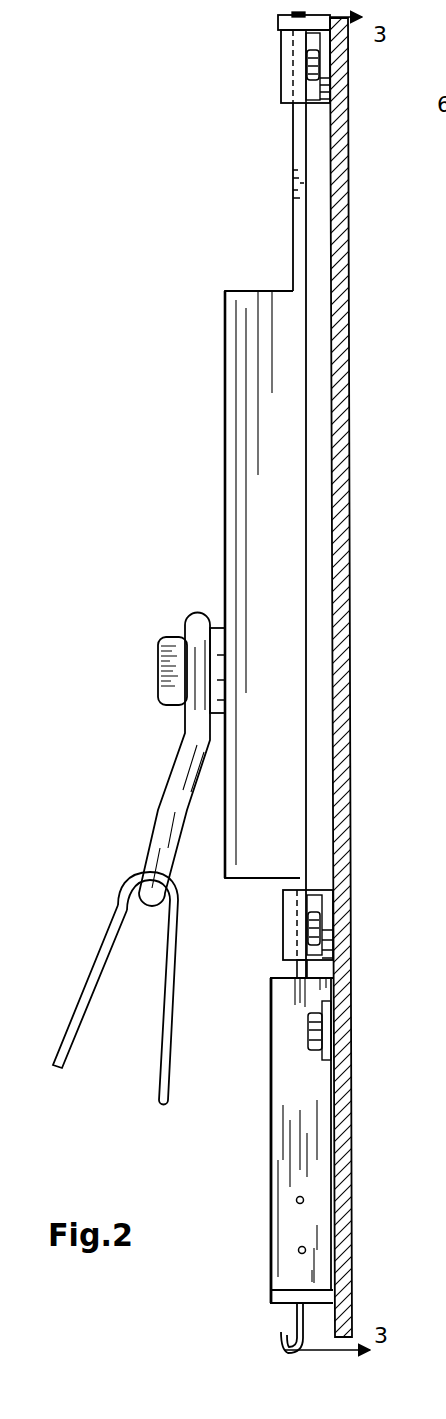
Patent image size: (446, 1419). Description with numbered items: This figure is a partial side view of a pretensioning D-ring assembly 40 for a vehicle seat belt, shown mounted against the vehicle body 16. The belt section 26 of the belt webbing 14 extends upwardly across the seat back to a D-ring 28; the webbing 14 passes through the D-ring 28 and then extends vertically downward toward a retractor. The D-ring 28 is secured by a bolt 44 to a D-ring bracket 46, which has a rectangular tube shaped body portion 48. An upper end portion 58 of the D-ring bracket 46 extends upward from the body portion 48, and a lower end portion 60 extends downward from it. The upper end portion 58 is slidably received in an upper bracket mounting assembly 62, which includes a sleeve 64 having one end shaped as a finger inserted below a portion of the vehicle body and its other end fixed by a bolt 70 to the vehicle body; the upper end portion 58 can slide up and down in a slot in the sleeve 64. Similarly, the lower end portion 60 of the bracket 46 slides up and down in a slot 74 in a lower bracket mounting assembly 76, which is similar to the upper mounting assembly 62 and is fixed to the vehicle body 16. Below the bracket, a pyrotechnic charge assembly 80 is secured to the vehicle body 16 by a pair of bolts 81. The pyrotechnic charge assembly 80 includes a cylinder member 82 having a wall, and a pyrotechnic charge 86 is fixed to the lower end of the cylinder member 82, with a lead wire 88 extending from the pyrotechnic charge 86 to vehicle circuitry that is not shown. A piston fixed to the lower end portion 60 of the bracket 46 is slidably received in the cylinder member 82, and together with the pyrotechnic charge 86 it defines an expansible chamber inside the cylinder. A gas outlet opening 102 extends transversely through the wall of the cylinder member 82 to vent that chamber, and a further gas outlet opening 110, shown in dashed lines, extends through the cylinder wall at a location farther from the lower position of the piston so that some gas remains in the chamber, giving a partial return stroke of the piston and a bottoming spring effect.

The belt webbing 14 is at (115, 1003).
The vehicle body 16 is at (335, 548).
The belt section 26 is at (97, 977).
The D-ring 28 is at (178, 785).
The pretensioning D-ring assembly 40 is at (110, 326).
The bolt 44 is at (162, 667).
The D-ring bracket 46 is at (214, 540).
The body portion 48 is at (267, 397).
The upper end portion 58 is at (297, 168).
The lower end portion 60 is at (300, 970).
The upper bracket mounting assembly 62 is at (235, 69).
The sleeve 64 is at (283, 104).
The bolt 70 is at (313, 50).
The slot 74 is at (297, 923).
The lower bracket mounting assembly 76 is at (325, 918).
The pyrotechnic charge assembly 80 is at (287, 1165).
The bolts 81 is at (307, 1027).
The cylinder member 82 is at (288, 1100).
The pyrotechnic charge 86 is at (278, 1296).
The lead wire 88 is at (292, 1328).
The gas outlet opening 102 is at (305, 1252).
The gas outlet opening 110 is at (302, 1197).